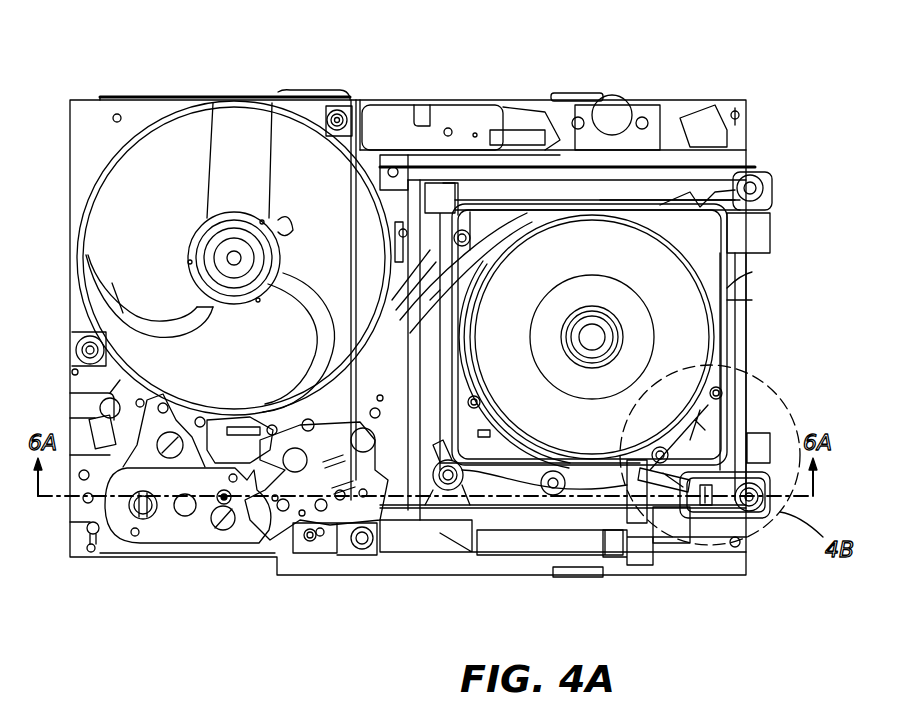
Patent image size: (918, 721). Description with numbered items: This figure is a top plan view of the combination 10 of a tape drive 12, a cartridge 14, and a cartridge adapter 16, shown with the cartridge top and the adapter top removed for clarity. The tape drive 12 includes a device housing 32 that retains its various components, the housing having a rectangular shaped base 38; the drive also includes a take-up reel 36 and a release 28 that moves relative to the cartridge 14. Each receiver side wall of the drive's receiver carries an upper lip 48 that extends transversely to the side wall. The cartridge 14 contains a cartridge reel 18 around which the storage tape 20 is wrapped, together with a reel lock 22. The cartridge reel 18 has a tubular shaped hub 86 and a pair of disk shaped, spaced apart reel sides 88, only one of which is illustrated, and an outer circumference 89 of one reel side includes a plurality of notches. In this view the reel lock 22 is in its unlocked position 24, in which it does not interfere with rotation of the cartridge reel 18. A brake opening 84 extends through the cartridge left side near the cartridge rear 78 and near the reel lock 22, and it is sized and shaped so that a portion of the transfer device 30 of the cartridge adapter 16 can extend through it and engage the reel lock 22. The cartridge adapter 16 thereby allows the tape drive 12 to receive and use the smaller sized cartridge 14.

The tape drive 10 is at (598, 56).
The tape drive 12 is at (151, 83).
The cartridge 14 is at (745, 220).
The cartridge adapter 16 is at (765, 165).
The cartridge reel 18 is at (617, 233).
The storage tape 20 is at (500, 247).
The reel lock 22 is at (692, 458).
The unlocked position 24 is at (718, 520).
The release 28 is at (708, 510).
The transfer device 30 is at (646, 490).
The device housing 32 is at (282, 85).
The take-up reel 36 is at (192, 138).
The base 38 is at (95, 118).
The upper lip 48 is at (433, 172).
The cartridge rear 78 is at (727, 288).
The brake opening 84 is at (625, 522).
The hub 86 is at (593, 306).
The reel sides 88 is at (556, 248).
The outer circumference 89 is at (645, 238).